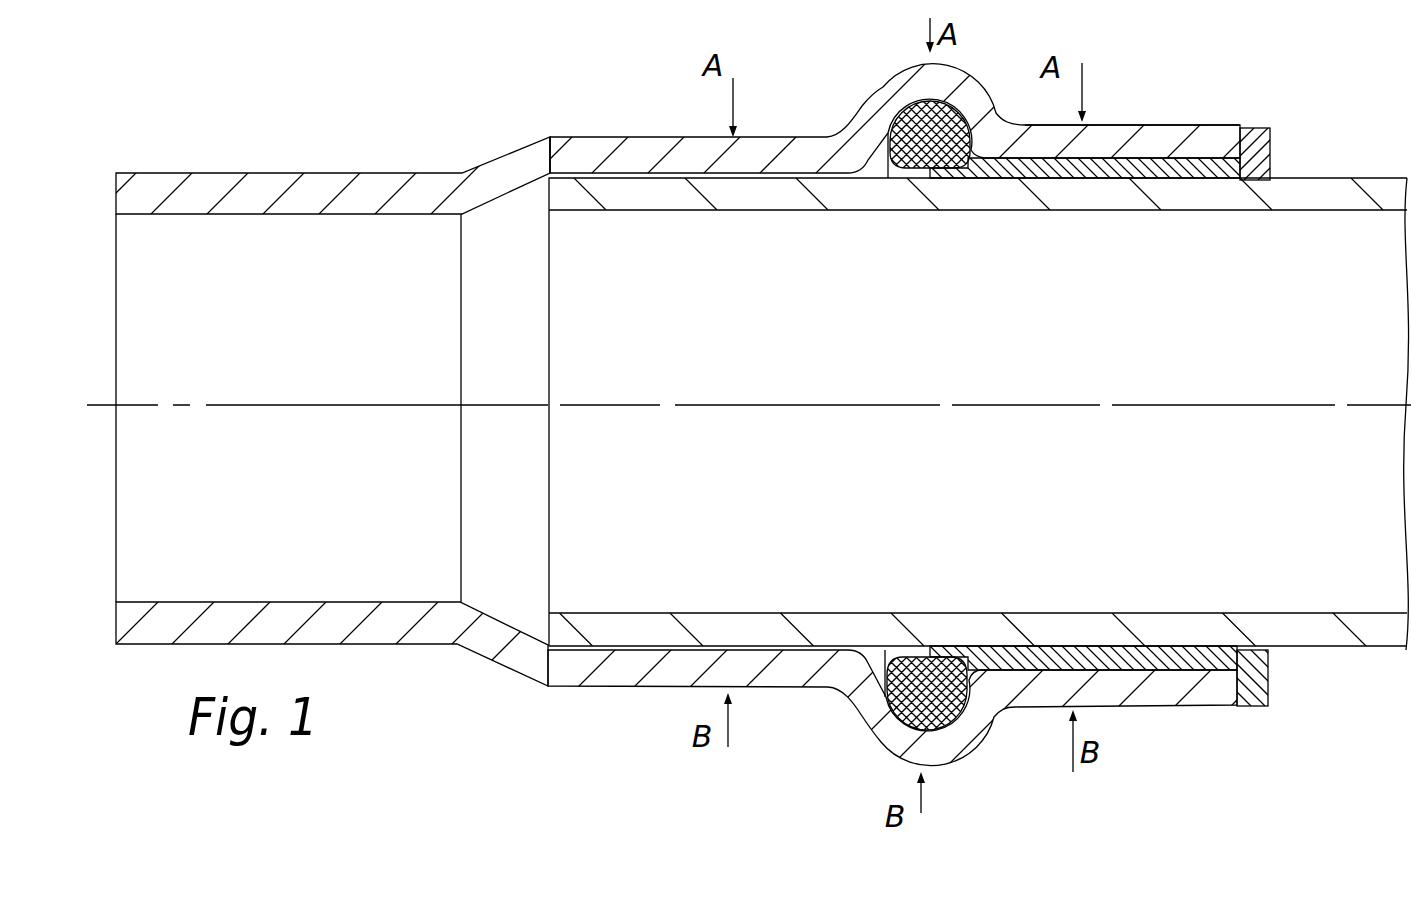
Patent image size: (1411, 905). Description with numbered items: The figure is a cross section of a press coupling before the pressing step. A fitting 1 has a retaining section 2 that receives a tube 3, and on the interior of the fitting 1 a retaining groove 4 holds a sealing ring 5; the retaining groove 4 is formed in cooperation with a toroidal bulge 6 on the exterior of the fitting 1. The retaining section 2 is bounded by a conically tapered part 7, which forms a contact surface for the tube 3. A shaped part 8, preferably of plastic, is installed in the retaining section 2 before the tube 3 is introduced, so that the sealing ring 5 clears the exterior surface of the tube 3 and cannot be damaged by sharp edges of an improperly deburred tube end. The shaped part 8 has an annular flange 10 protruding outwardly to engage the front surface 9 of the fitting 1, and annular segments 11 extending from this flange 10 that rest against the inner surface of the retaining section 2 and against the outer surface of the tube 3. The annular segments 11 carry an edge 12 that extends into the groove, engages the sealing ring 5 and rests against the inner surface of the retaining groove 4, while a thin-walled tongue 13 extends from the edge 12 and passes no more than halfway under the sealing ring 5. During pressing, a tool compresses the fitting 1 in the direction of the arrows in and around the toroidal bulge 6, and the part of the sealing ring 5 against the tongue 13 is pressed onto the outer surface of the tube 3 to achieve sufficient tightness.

The fitting 1 is at (665, 132).
The retaining section 2 is at (711, 649).
The tube 3 is at (773, 192).
The retaining groove 4 is at (886, 148).
The sealing ring 5 is at (938, 127).
The toroidal bulge 6 is at (957, 733).
The conically tapered part 7 is at (511, 172).
The shaped part 8 is at (1198, 152).
The front surface 9 is at (1237, 688).
The annular flange 10 is at (1253, 147).
The annular segments 11 is at (1095, 170).
The edge 12 is at (973, 673).
The thin-walled tongue 13 is at (848, 693).